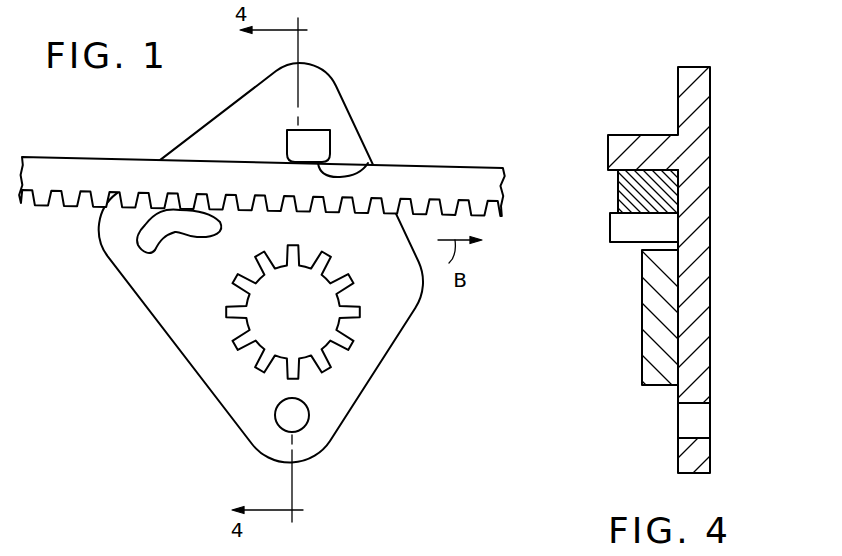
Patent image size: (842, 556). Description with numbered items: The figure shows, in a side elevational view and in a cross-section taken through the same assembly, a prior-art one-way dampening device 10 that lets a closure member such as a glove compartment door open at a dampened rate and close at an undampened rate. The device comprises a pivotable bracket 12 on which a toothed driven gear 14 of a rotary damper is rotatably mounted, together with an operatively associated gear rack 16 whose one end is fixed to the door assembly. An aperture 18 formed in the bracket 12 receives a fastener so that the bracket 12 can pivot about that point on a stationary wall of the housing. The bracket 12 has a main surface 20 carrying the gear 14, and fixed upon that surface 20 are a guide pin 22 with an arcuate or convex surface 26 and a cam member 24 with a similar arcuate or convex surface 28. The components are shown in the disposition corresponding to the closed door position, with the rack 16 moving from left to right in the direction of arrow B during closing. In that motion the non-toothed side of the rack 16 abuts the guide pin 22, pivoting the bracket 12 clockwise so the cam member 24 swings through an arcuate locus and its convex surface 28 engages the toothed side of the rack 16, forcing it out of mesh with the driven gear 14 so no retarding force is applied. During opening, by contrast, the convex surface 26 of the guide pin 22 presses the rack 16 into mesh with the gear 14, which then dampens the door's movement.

In FIG. 1, the one-way dampening device 10 is at (398, 56).
In FIG. 1, the bracket 12 is at (227, 398).
In FIG. 4, the bracket 12 is at (702, 338).
In FIG. 1, the toothed driven gear 14 is at (318, 342).
In FIG. 4, the toothed driven gear 14 is at (642, 318).
In FIG. 1, the gear rack 16 is at (445, 173).
In FIG. 4, the gear rack 16 is at (663, 192).
In FIG. 1, the aperture 18 is at (303, 424).
In FIG. 4, the aperture 18 is at (678, 422).
In FIG. 1, the main surface 20 is at (168, 313).
In FIG. 1, the guide pin 22 is at (322, 138).
In FIG. 4, the guide pin 22 is at (627, 143).
In FIG. 1, the cam member 24 is at (173, 230).
In FIG. 4, the cam member 24 is at (610, 232).
In FIG. 1, the arcuate or convex surface 26 is at (358, 163).
In FIG. 1, the arcuate or convex surface 28 is at (147, 226).